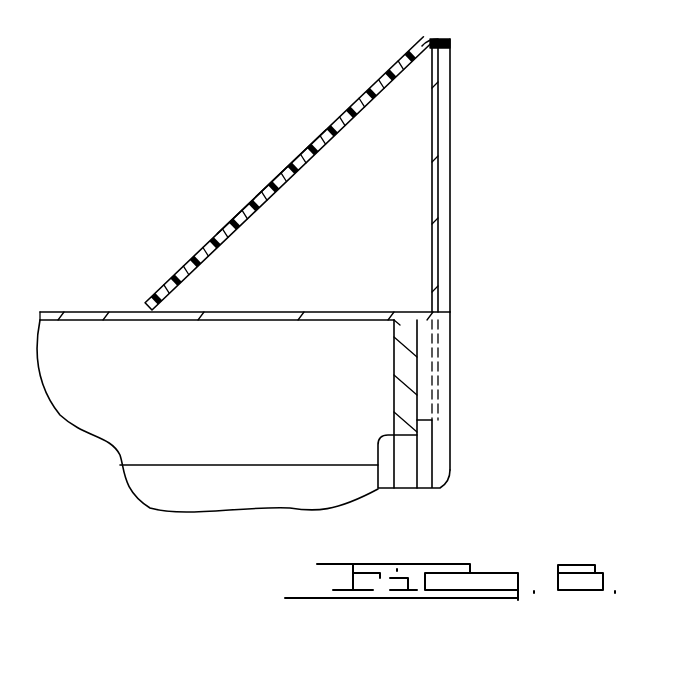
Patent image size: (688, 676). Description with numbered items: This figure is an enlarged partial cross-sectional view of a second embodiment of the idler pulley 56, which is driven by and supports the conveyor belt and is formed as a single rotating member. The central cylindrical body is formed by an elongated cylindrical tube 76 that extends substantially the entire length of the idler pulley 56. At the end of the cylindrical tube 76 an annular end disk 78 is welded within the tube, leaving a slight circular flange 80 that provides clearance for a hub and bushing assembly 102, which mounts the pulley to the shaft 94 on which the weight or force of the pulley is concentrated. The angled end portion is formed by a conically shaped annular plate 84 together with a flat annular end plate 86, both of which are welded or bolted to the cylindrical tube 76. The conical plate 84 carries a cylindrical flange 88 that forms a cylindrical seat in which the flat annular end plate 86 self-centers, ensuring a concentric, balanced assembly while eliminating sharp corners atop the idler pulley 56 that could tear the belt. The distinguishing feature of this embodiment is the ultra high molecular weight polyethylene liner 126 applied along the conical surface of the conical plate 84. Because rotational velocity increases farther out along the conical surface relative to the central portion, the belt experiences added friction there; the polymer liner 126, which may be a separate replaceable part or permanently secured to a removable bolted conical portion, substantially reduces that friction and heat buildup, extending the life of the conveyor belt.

The idler pulley 56 is at (166, 129).
The elongated cylindrical tube 76 is at (93, 322).
The annular end disk 78 is at (405, 357).
The circular flange 80 is at (449, 310).
The conically shaped annular plate 84 is at (258, 222).
The flat annular end plate 86 is at (433, 193).
The cylindrical flange 88 is at (452, 48).
The shaft 94 is at (220, 476).
The hub and bushing assembly 102 is at (380, 434).
The ultra high molecular weight polyethylene liner 126 is at (302, 157).